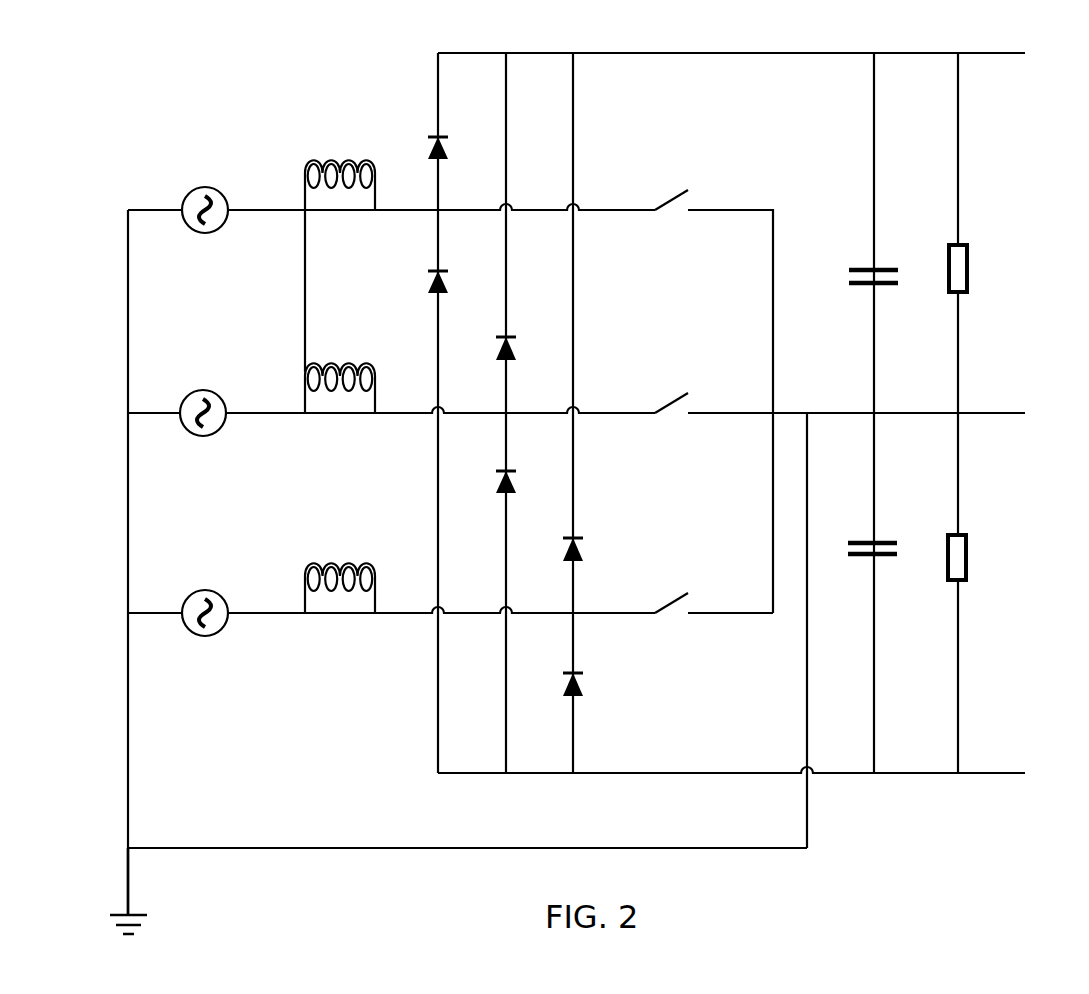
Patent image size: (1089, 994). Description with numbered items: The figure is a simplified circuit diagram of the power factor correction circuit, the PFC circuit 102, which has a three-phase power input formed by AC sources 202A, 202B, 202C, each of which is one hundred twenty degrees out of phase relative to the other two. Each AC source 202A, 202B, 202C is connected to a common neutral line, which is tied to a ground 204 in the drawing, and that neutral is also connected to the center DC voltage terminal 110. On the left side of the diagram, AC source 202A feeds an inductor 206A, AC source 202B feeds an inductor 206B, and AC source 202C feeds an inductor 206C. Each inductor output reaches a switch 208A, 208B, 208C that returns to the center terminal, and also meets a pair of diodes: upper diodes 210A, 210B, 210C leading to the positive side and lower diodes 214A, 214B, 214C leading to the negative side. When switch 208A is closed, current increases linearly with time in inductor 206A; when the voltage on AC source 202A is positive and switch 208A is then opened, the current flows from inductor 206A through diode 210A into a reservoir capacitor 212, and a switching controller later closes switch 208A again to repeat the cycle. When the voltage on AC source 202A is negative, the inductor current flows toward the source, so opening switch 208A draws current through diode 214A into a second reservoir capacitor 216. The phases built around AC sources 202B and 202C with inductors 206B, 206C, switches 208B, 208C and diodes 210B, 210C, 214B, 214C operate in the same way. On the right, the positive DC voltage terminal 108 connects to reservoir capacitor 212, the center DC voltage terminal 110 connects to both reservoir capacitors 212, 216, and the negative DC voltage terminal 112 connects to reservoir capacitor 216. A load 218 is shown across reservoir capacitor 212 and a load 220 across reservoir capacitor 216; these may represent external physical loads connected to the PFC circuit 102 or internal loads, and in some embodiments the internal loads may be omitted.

The PFC circuit 102 is at (138, 110).
The positive DC voltage terminal 108 is at (1007, 53).
The center DC voltage terminal 110 is at (1007, 413).
The negative DC voltage terminal 112 is at (1007, 773).
The AC source 202A is at (184, 201).
The AC source 202B is at (182, 404).
The AC source 202C is at (184, 603).
The ground 204 is at (110, 915).
The inductor 206A is at (303, 170).
The inductor 206B is at (303, 370).
The inductor 206C is at (303, 570).
The switch 208A is at (682, 192).
The switch 208B is at (682, 395).
The switch 208C is at (682, 597).
The diode 210A is at (428, 137).
The diode 210B is at (496, 337).
The diode 210C is at (563, 538).
The diode 214A is at (428, 271).
The diode 214B is at (496, 471).
The diode 214C is at (563, 673).
The reservoir capacitor 212 is at (853, 270).
The reservoir capacitor 216 is at (852, 543).
The load 218 is at (949, 255).
The load 220 is at (948, 548).